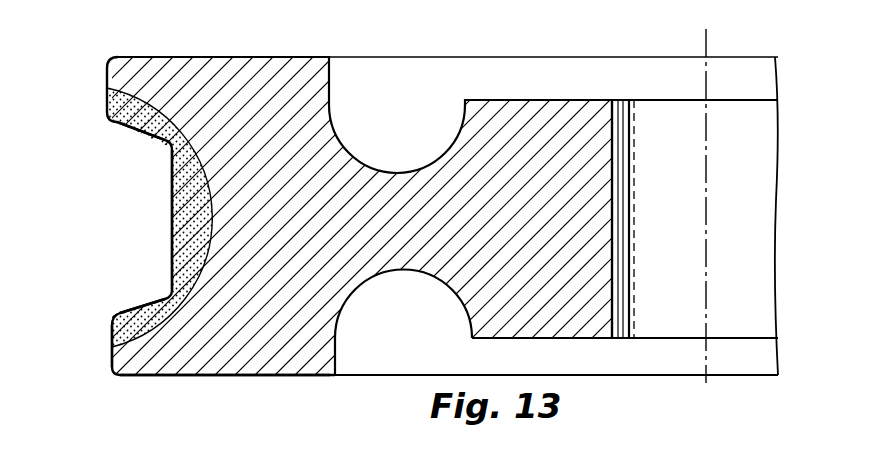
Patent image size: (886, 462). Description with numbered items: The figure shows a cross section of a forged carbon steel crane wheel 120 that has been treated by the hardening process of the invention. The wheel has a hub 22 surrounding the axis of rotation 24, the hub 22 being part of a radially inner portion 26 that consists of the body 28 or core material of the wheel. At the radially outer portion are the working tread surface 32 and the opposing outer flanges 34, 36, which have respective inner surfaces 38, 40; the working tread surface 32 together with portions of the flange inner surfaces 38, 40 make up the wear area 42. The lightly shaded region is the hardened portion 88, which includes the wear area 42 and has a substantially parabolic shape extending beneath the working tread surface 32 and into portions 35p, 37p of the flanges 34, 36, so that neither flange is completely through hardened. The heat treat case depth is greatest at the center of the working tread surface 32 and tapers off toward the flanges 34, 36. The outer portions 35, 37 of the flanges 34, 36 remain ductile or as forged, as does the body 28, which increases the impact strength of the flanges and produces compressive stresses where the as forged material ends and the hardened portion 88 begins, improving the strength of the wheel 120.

The hub 22 is at (640, 100).
The axis of rotation 24 is at (706, 38).
The radially inner portion 26 is at (515, 115).
The body 28 is at (375, 231).
The working tread surface 32 is at (175, 241).
The outer flange 34 is at (107, 62).
The portion of flange 35 is at (160, 62).
The portion of flange 35p is at (112, 105).
The outer flange 36 is at (112, 355).
The portion of flange 37 is at (134, 368).
The portion of flange 37p is at (112, 322).
The flange inner surface 38 is at (133, 130).
The flange inner surface 40 is at (145, 296).
The wear area 42 is at (148, 216).
The hardened portion 88 is at (175, 175).
The crane wheel 120 is at (285, 65).